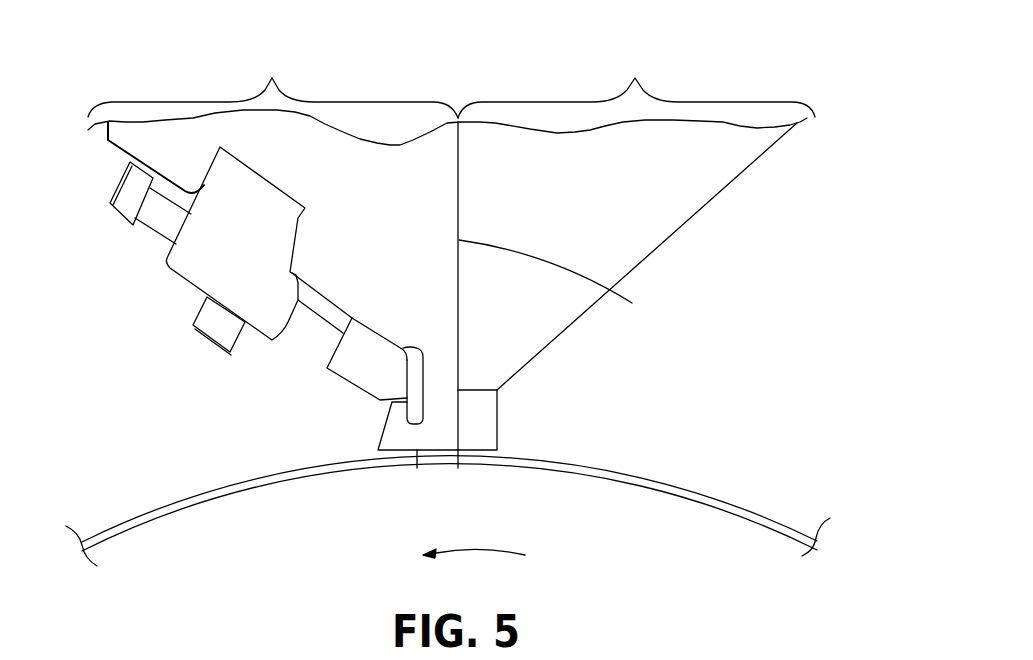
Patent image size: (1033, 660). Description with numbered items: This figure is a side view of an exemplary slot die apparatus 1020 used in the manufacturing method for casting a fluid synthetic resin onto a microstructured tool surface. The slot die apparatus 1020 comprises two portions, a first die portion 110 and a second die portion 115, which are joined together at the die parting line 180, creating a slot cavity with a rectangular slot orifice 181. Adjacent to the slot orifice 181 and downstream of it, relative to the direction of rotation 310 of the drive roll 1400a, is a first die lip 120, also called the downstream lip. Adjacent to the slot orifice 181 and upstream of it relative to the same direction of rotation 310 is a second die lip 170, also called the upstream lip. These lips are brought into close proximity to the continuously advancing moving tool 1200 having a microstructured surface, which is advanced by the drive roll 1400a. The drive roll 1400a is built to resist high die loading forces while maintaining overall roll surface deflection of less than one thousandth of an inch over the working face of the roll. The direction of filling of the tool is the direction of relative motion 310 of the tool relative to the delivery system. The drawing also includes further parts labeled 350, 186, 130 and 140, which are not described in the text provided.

The slot die apparatus 1020 is at (720, 50).
The first die portion 110 is at (273, 84).
The second die portion 115 is at (636, 84).
The illuminator / light source module 350 is at (207, 262).
The arm 186 is at (337, 372).
The hook tab 130 is at (447, 426).
The foot 140 is at (377, 455).
The second die lip 170 is at (487, 467).
The die parting line 180 is at (628, 256).
The slot orifice 181 is at (458, 468).
The first die lip 120 is at (417, 468).
The tool 1200 is at (272, 487).
The drive roll 1400a is at (363, 563).
The direction of relative motion 310 is at (503, 555).